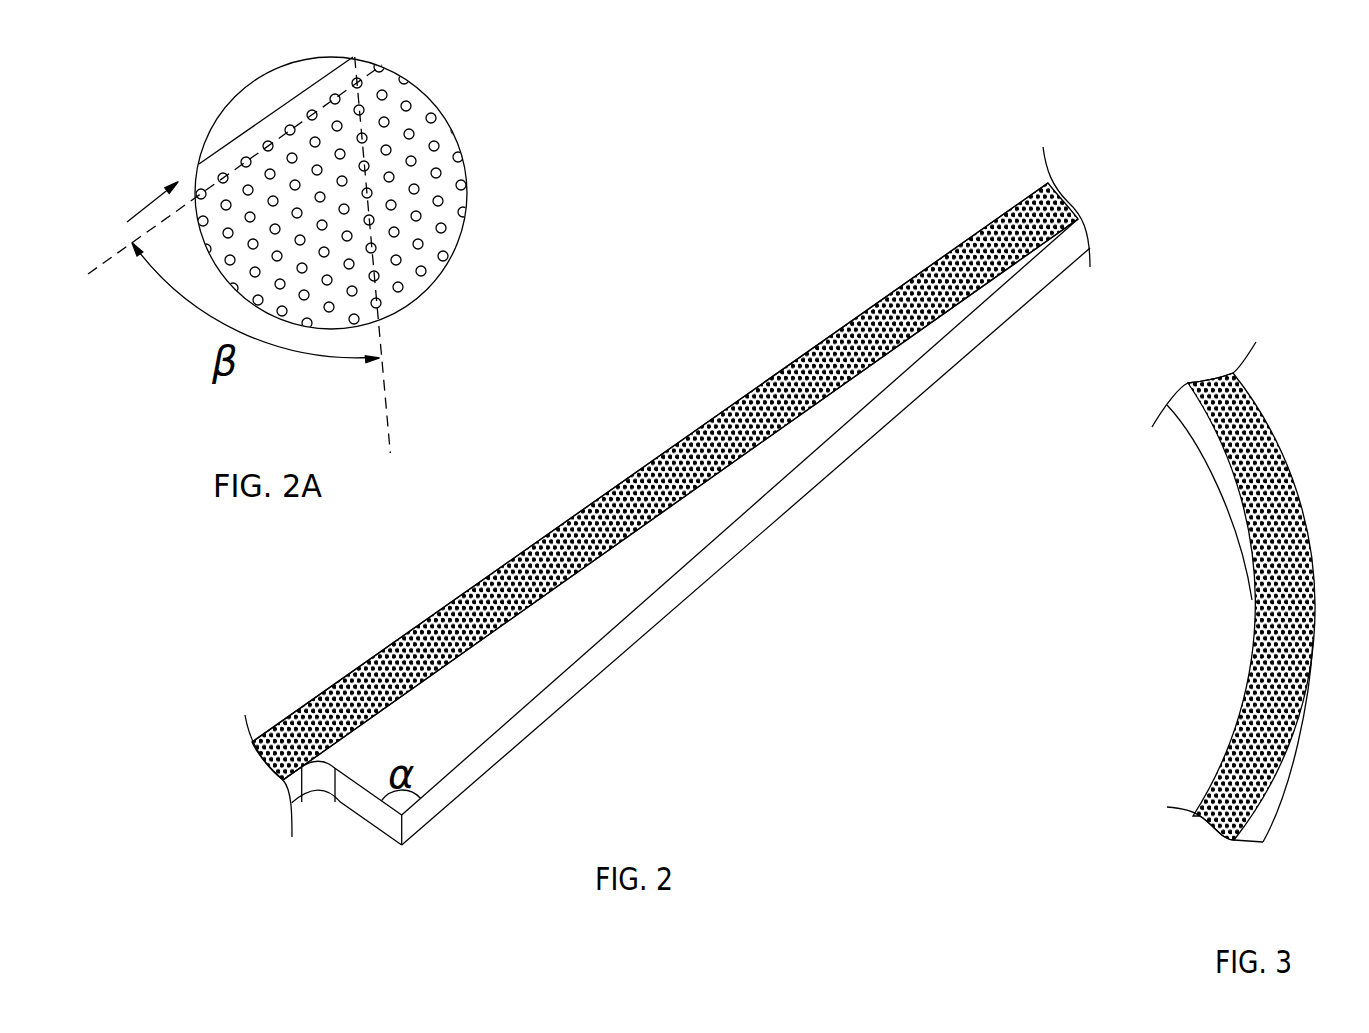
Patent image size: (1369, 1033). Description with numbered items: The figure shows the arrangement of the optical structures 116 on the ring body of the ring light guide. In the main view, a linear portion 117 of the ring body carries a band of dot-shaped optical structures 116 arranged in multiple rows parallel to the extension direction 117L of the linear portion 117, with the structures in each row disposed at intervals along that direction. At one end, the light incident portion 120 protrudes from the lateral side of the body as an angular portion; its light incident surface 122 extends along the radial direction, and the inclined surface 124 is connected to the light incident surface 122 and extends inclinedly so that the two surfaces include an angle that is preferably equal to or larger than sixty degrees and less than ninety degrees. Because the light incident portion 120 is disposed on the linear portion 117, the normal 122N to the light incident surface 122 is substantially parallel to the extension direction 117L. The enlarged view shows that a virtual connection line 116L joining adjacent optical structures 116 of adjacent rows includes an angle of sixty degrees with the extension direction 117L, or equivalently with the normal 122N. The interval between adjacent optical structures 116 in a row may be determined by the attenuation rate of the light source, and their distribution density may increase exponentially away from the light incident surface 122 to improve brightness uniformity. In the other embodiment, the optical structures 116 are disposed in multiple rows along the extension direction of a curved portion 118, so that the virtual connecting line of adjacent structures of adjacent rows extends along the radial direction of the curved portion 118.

In FIG. 2, the optical structures 116 is at (960, 248).
In FIG. 3, the optical structures 116 is at (1268, 446).
In FIG. 2, the linear portion 117 is at (713, 413).
In FIG. 3, the curved portion 118 is at (1253, 632).
In FIG. 2, the light incident portion 120 is at (533, 650).
In FIG. 2, the light incident surface 122 is at (372, 810).
In FIG. 2, the inclined surface 124 is at (673, 593).
In FIG. 2A, the virtual connection line 116L is at (407, 256).
In FIG. 2A, the extension direction 117L is at (219, 169).
In FIG. 2A, the normal to the light incident surface 122N is at (134, 194).